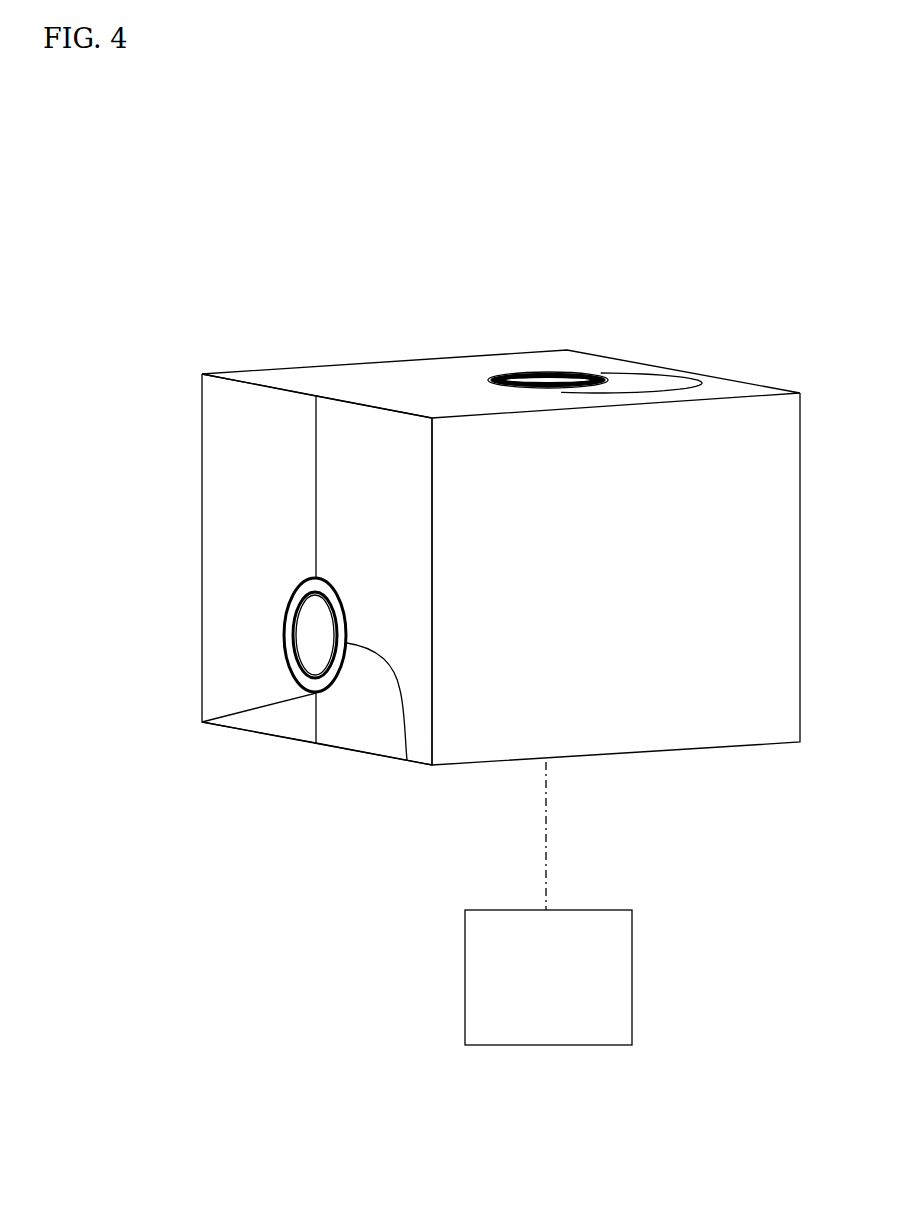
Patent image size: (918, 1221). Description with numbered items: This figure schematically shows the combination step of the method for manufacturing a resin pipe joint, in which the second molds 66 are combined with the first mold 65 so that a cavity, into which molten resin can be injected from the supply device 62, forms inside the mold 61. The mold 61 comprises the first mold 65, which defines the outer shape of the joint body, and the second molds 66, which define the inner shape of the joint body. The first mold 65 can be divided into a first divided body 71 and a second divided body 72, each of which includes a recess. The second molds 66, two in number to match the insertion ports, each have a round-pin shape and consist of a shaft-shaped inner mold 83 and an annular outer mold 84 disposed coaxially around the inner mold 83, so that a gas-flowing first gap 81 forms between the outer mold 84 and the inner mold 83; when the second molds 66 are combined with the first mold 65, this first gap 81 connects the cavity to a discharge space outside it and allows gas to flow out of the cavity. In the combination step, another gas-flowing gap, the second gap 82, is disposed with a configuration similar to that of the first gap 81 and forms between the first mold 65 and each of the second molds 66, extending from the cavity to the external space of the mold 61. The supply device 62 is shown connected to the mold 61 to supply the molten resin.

The mold 61 is at (502, 596).
The supply device 62 is at (465, 995).
The first mold 65 is at (256, 521).
The first divided body 71 is at (203, 483).
The second divided body 72 is at (325, 494).
The first gap 81 is at (286, 614).
The second gap 82 is at (407, 760).
The inner mold 83 is at (304, 648).
The outer mold 84 is at (304, 673).
The second mold 66 is at (338, 688).